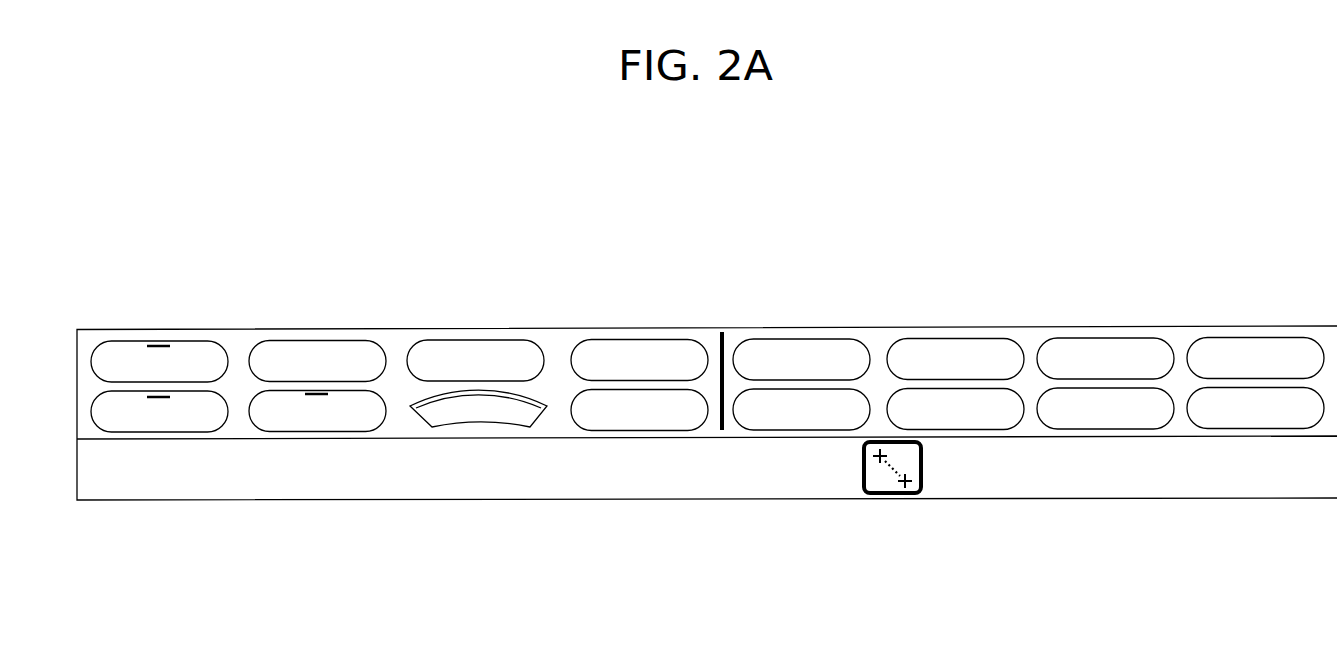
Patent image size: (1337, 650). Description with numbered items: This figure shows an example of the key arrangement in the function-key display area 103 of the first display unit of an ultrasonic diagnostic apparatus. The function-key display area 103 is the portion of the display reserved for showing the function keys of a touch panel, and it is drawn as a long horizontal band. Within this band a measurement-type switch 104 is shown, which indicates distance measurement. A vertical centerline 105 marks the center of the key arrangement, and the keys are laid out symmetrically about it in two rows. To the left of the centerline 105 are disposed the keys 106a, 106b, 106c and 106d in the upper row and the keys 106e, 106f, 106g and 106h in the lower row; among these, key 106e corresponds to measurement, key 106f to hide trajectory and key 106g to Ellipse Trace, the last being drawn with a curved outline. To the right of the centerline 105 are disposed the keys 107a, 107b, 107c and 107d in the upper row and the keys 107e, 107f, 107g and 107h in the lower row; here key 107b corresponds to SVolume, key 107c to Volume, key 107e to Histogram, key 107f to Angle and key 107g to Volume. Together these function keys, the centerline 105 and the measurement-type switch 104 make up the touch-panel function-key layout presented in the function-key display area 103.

The function-key display area 103 is at (707, 444).
The measurement-type switch 104 is at (884, 502).
The centerline 105 is at (703, 355).
The key 106a is at (159, 332).
The key 106b is at (317, 332).
The key 106c is at (475, 332).
The key 106d is at (639, 332).
The measurement key 106e is at (159, 436).
The hide trajectory key 106f is at (313, 437).
The Ellipse Trace key 106g is at (473, 436).
The key 106h is at (639, 442).
The key 107a is at (801, 331).
The SVolume key 107b is at (955, 331).
The Volume key 107c is at (1105, 331).
The key 107d is at (1255, 331).
The Histogram key 107e is at (793, 435).
The Angle key 107f is at (955, 435).
The Volume key 107g is at (1105, 429).
The key 107h is at (1255, 430).